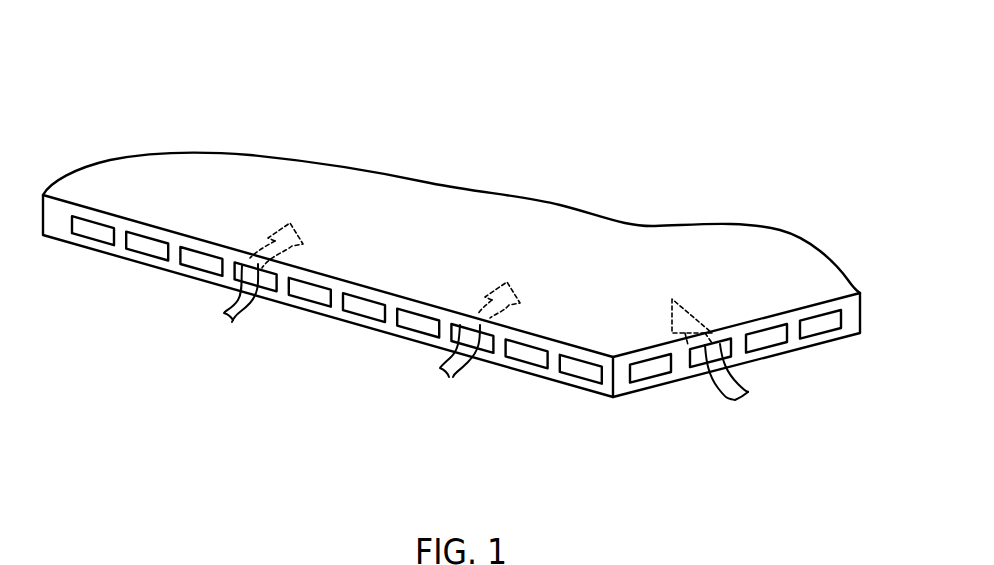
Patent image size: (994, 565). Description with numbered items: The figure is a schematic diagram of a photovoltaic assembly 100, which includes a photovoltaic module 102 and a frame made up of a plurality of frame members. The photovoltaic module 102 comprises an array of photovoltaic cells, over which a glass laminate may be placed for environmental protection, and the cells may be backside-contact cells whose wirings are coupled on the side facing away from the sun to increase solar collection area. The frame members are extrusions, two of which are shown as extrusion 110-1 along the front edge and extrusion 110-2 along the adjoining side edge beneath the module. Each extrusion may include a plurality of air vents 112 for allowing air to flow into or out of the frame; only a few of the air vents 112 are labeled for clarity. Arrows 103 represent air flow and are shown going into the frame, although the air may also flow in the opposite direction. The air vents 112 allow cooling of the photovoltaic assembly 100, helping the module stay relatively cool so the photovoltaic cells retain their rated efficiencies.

The photovoltaic assembly 100 is at (194, 82).
The photovoltaic module 102 is at (572, 222).
The arrows 103 is at (225, 318).
The extrusion 110-1 is at (580, 383).
The extrusion 110-2 is at (616, 398).
The air vents 112 is at (88, 223).